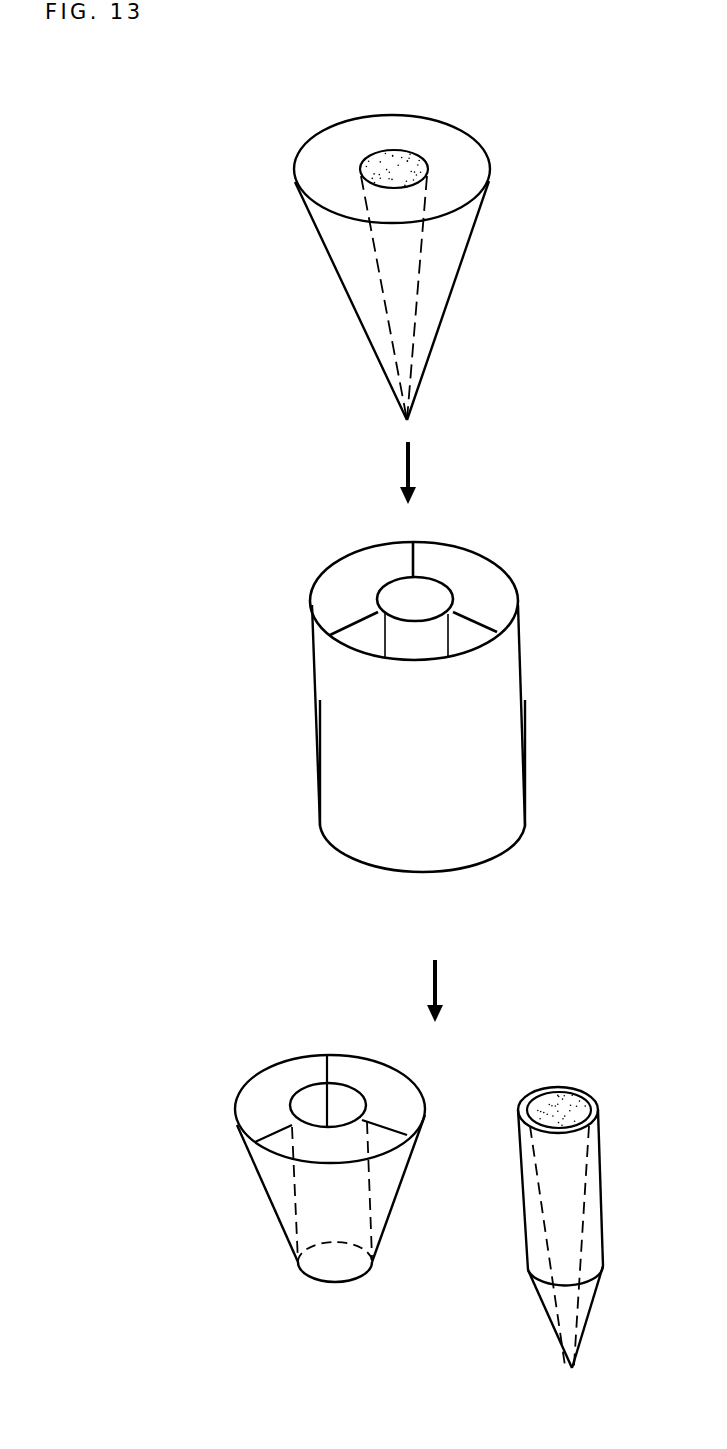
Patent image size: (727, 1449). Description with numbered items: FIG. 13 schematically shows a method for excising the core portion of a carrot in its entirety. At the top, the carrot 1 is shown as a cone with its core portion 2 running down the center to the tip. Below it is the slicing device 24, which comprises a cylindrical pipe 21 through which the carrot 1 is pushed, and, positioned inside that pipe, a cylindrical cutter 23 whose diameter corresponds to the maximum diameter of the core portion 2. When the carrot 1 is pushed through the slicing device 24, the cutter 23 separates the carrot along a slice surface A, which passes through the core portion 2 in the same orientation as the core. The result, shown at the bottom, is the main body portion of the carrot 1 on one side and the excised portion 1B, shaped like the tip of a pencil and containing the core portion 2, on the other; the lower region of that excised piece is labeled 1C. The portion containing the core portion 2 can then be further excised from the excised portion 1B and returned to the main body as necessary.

The carrot 1 is at (476, 152).
The core portion 2 is at (410, 302).
The cylindrical pipe 21 is at (518, 630).
The cylindrical cutter 23 is at (468, 617).
The slicing device 24 is at (513, 797).
The excised portion 1B is at (583, 1088).
The conical tip section 1C is at (595, 1252).
The slice surface A is at (287, 1127).